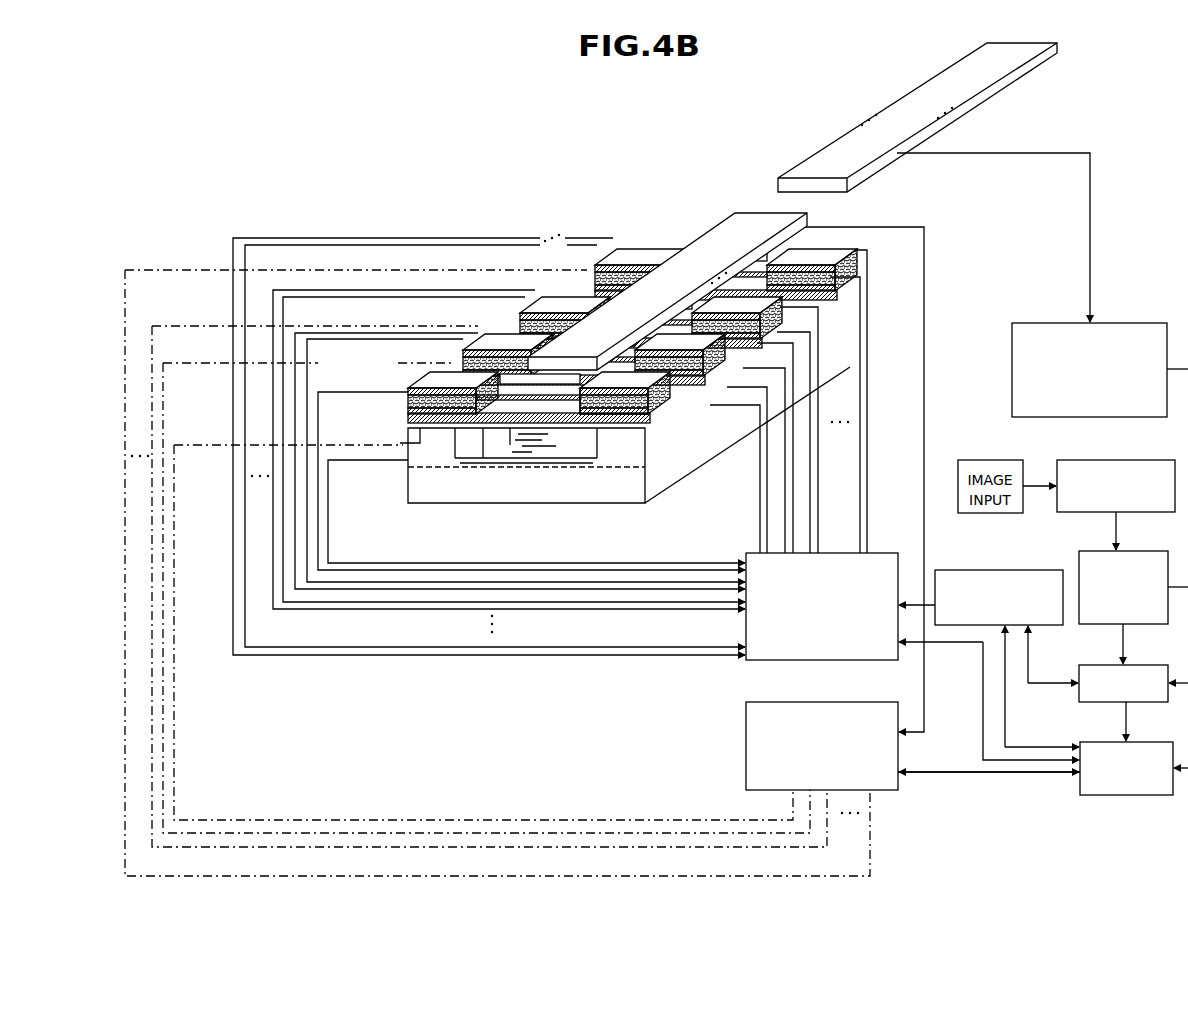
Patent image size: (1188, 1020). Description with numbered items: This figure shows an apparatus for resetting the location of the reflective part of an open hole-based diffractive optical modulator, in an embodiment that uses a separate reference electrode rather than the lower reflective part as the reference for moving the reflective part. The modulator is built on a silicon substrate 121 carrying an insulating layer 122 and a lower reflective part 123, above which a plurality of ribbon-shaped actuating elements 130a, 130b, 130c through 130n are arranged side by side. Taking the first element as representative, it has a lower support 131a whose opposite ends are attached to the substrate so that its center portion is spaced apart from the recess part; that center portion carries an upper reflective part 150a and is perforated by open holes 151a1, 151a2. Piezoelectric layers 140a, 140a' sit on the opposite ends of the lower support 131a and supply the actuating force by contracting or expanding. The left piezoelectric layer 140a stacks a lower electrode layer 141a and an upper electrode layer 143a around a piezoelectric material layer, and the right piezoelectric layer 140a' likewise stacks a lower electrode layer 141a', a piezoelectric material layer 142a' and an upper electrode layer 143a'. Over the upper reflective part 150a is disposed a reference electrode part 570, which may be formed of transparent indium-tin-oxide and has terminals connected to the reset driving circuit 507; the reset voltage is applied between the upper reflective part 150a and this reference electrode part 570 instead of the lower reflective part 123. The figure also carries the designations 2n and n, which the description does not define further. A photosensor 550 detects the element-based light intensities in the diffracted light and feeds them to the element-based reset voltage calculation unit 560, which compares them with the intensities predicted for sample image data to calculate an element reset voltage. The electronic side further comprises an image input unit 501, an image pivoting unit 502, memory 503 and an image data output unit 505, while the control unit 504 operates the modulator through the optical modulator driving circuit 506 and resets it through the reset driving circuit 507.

The photosensor 550 is at (833, 137).
The reference electrode part 570 is at (722, 235).
The element-based reset voltage calculation unit 560 is at (1140, 323).
The actuating element 130a is at (360, 390).
The actuating element 130b is at (487, 337).
The actuating element 130c is at (552, 290).
The actuating element 130n is at (617, 243).
The lower support 131a is at (408, 420).
The piezoelectric layer 140a is at (409, 377).
The upper electrode layer 143a is at (418, 369).
The lower electrode layer 141a is at (418, 394).
The piezoelectric layer 140a' is at (669, 453).
The upper electrode layer 143a' is at (676, 438).
The piezoelectric material layer 142a' is at (670, 451).
The lower electrode layer 141a' is at (658, 467).
The upper reflective part 150a is at (528, 447).
The open hole 151a1 is at (485, 460).
The open hole 151a2 is at (512, 460).
The silicon substrate 121 is at (630, 505).
The insulating layer 122 is at (582, 460).
The lower reflective part 123 is at (462, 460).
The driving signal lines 2n is at (753, 468).
The reset signal lines n is at (745, 826).
The image input unit 501 is at (1150, 460).
The image pivoting unit 502 is at (1153, 551).
The memory 503 is at (1150, 665).
The control unit 504 is at (1145, 742).
The image data output unit 505 is at (1020, 570).
The optical modulator driving circuit 506 is at (905, 588).
The reset driving circuit 507 is at (745, 720).